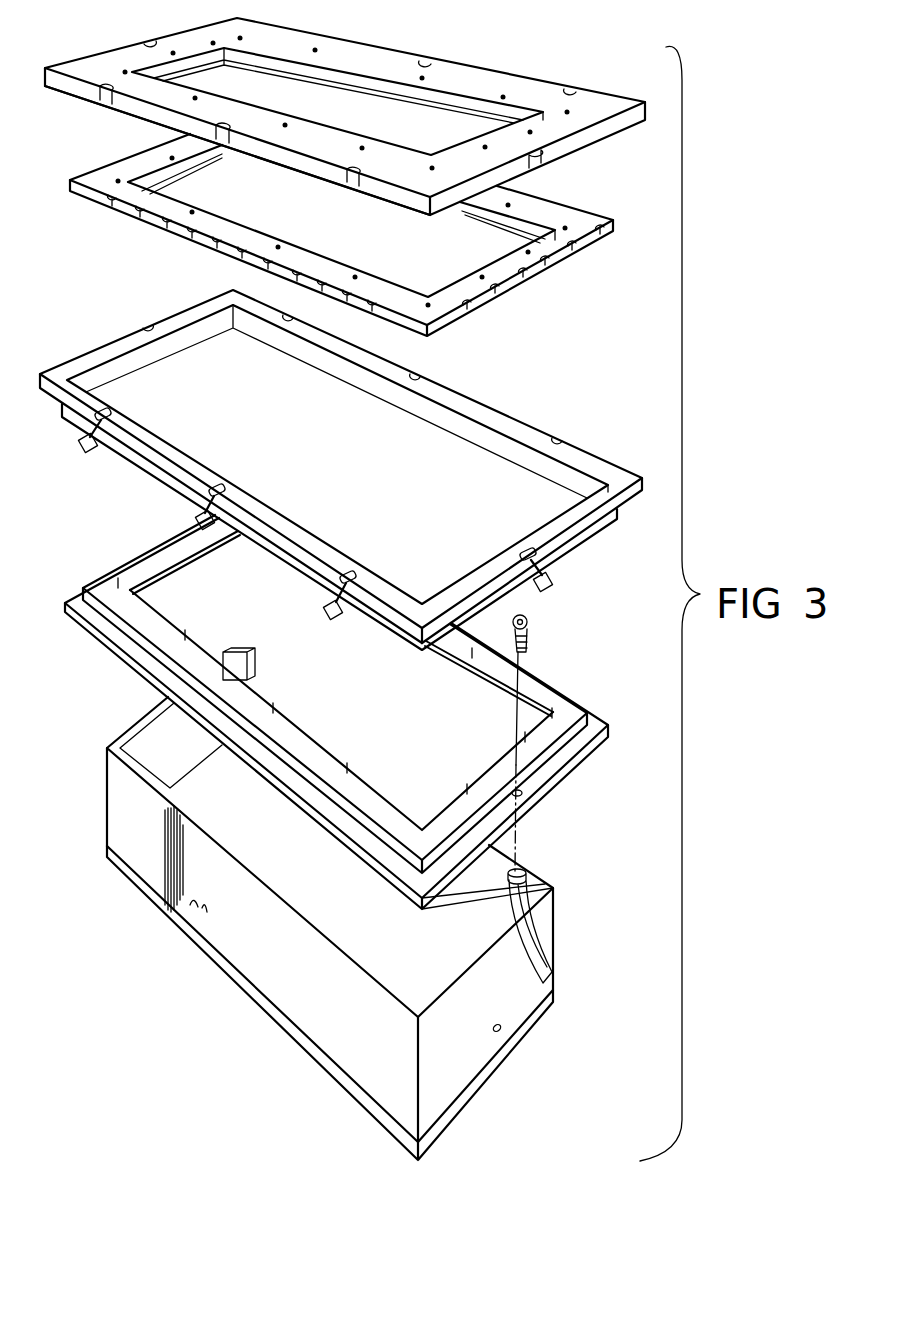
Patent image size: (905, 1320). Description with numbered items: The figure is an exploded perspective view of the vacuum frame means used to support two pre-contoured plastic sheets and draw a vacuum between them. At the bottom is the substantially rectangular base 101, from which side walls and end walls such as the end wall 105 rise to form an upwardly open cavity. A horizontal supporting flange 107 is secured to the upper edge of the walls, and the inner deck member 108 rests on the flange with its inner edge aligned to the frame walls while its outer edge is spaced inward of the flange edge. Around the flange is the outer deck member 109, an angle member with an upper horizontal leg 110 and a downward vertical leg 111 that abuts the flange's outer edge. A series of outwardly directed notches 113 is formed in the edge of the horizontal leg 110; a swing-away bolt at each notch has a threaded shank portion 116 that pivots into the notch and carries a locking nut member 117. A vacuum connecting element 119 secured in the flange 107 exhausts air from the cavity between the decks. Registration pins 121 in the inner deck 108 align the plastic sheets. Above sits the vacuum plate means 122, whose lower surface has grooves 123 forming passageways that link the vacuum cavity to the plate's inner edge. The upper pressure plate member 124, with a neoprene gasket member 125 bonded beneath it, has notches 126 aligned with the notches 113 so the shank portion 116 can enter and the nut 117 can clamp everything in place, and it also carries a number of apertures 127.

The base 101 is at (378, 935).
The end wall 105 is at (362, 1067).
The horizontal supporting flange 107 is at (558, 760).
The inner deck member 108 is at (568, 712).
The outer deck member 109 is at (177, 501).
The horizontal leg 110 is at (172, 460).
The vertical leg 111 is at (597, 527).
The notches 113 is at (563, 446).
The swing-away bolt shank portion 116 is at (88, 450).
The locking nut member 117 is at (92, 458).
The vacuum connecting element 119 is at (530, 640).
The registration pins 121 is at (167, 562).
The vacuum plate means 122 is at (374, 281).
The grooves 123 is at (217, 247).
The upper pressure plate member 124 is at (498, 82).
The neoprene gasket member 125 is at (145, 117).
The notches 126 is at (102, 96).
The apertures 127 is at (316, 50).